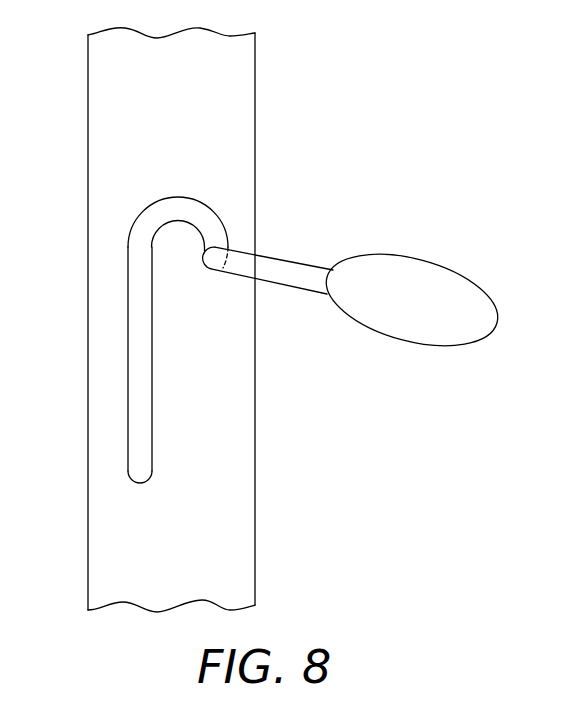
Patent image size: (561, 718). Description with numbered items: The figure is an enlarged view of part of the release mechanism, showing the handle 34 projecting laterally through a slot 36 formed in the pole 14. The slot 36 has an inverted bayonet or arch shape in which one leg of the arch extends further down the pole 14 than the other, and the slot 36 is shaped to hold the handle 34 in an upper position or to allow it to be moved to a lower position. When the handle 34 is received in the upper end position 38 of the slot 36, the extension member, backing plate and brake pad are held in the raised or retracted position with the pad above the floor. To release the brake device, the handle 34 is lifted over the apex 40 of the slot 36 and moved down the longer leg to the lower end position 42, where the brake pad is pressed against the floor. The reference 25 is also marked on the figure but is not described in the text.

The pole 14 is at (247, 85).
The slot 25 is at (132, 344).
The handle 34 is at (426, 268).
The slot 36 is at (128, 343).
The upper end position 38 is at (207, 270).
The apex 40 is at (177, 197).
The lower end position 42 is at (140, 484).